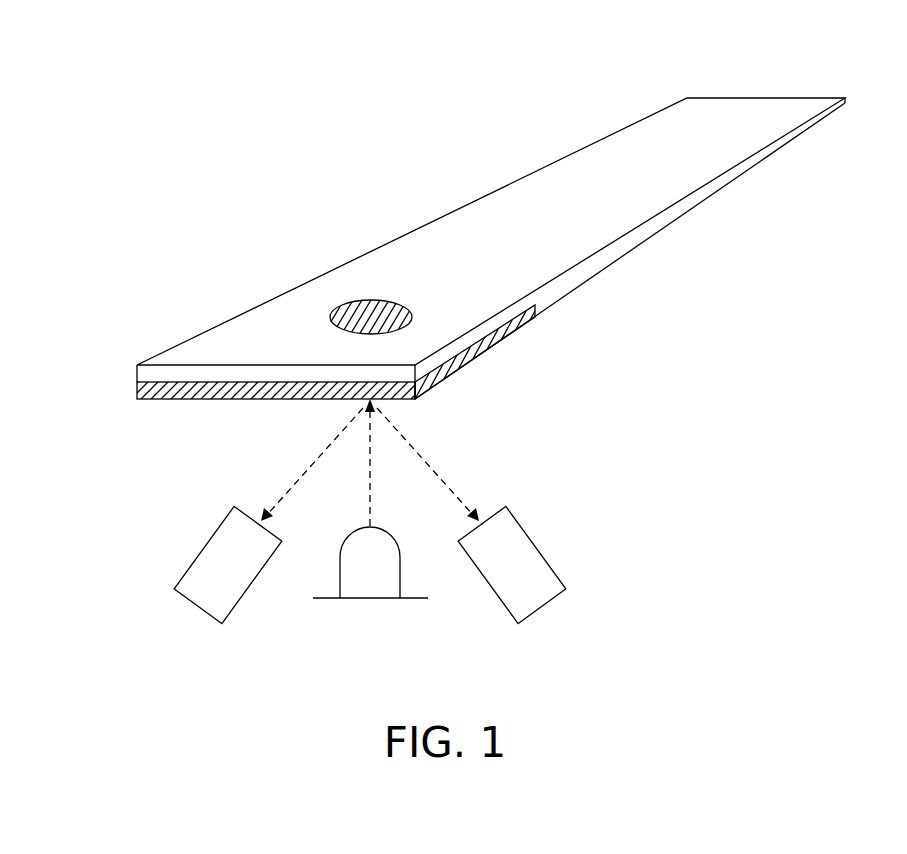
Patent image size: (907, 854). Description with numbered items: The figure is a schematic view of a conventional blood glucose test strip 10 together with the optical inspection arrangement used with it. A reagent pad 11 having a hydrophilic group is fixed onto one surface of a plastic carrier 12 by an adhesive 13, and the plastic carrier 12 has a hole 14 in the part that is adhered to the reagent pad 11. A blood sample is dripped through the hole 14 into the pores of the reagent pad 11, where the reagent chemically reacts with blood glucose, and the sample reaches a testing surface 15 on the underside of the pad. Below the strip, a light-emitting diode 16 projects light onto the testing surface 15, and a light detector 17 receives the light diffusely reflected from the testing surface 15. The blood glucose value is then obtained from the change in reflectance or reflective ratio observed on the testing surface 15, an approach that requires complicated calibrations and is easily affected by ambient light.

The test strip 10 is at (469, 250).
The reagent pad 11 is at (137, 389).
The plastic carrier 12 is at (688, 202).
The adhesive 13 is at (482, 345).
The hole 14 is at (369, 296).
The testing surface 15 is at (268, 400).
The light-emitting diode 16 is at (370, 590).
The light detector 17 is at (203, 595).